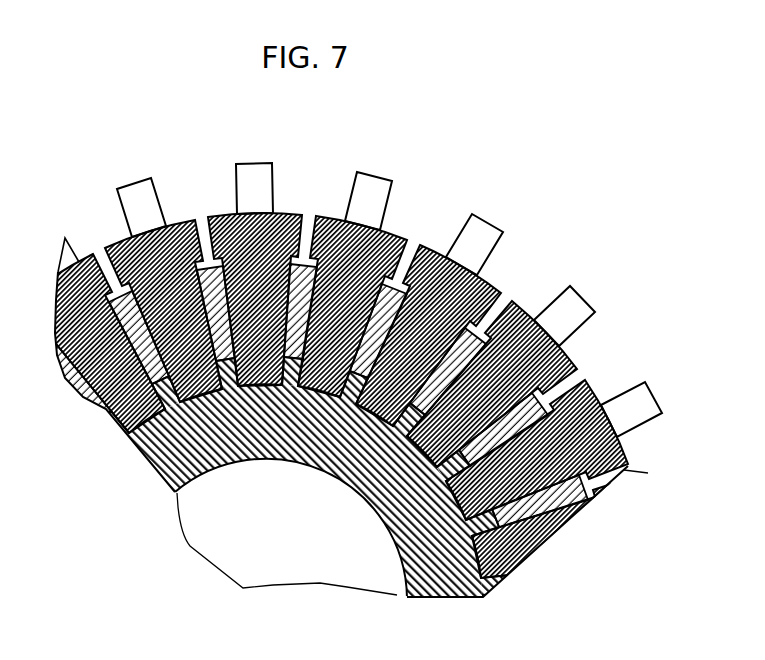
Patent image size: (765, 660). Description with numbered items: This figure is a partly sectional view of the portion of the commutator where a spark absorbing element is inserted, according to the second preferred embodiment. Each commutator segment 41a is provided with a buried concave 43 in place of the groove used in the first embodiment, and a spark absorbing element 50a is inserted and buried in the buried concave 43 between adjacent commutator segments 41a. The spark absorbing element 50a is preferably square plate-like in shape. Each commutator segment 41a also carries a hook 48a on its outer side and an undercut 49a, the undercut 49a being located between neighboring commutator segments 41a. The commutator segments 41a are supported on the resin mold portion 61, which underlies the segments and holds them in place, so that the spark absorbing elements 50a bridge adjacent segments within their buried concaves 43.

The commutator segment 41a is at (289, 217).
The buried concave 43 is at (385, 232).
The hook 48a is at (143, 202).
The undercut 49a is at (205, 233).
The spark absorbing element 50a is at (494, 298).
The resin mold portion 61 is at (153, 445).